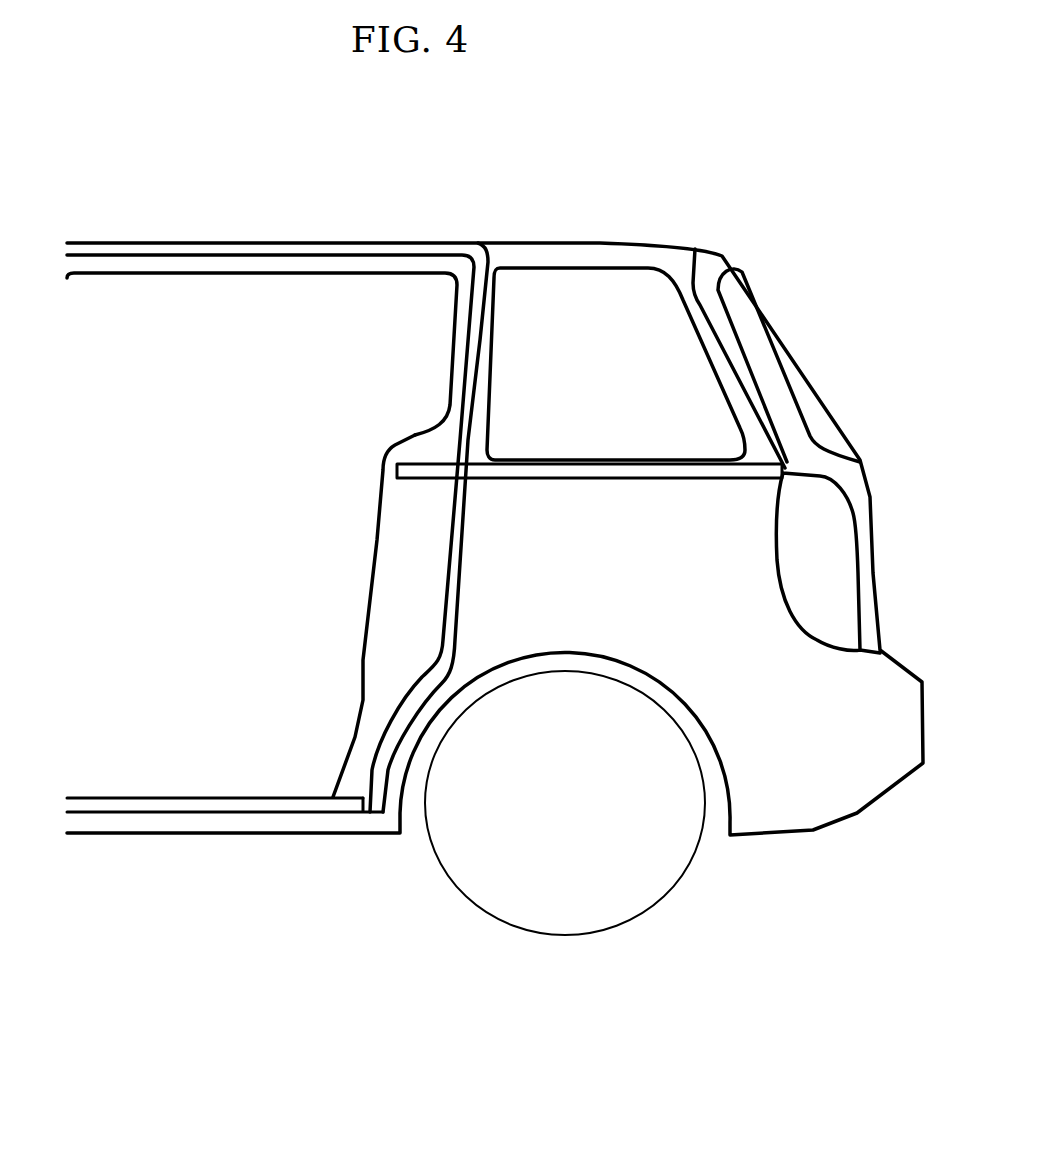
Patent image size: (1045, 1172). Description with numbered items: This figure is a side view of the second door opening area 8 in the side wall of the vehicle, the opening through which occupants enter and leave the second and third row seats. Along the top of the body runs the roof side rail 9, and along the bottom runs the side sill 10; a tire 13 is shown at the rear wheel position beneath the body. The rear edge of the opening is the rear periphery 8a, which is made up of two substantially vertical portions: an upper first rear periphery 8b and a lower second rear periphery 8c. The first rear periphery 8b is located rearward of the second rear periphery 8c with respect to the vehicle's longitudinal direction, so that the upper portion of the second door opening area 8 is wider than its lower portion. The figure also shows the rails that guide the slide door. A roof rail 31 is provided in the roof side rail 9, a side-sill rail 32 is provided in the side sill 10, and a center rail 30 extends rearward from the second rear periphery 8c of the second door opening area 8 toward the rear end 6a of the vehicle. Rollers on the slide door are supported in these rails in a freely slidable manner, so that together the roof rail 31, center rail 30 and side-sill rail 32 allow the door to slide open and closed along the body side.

The roof side rail 9 is at (168, 228).
The roof rail 31 is at (200, 247).
The second door opening area 8 is at (158, 722).
The rear periphery 8a is at (174, 381).
The first rear periphery 8b is at (456, 331).
The second rear periphery 8c is at (373, 547).
The side sill 10 is at (237, 858).
The side-sill rail 32 is at (273, 803).
The center rail 30 is at (587, 467).
The rear end of vehicle 6a is at (797, 438).
The tire 13 is at (578, 842).